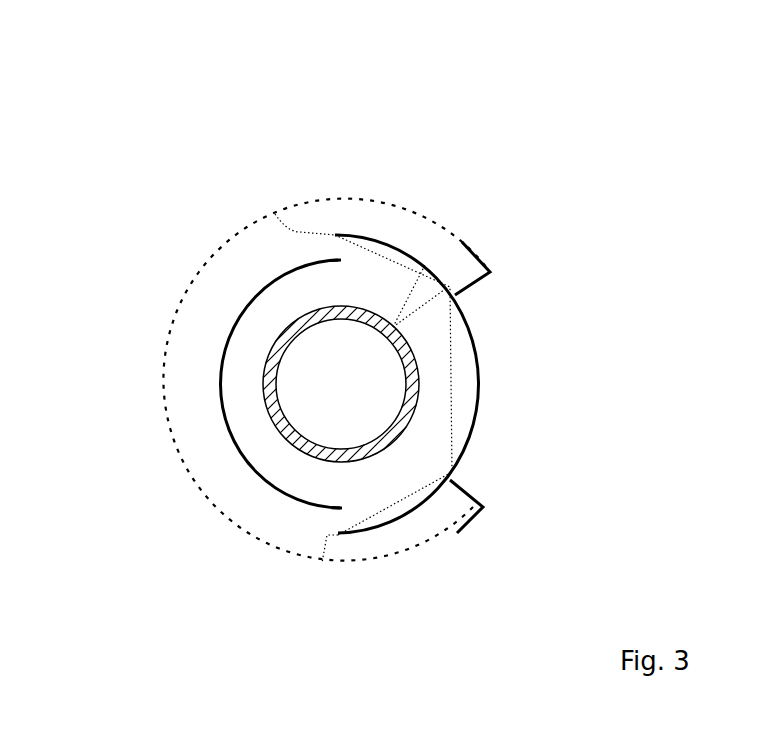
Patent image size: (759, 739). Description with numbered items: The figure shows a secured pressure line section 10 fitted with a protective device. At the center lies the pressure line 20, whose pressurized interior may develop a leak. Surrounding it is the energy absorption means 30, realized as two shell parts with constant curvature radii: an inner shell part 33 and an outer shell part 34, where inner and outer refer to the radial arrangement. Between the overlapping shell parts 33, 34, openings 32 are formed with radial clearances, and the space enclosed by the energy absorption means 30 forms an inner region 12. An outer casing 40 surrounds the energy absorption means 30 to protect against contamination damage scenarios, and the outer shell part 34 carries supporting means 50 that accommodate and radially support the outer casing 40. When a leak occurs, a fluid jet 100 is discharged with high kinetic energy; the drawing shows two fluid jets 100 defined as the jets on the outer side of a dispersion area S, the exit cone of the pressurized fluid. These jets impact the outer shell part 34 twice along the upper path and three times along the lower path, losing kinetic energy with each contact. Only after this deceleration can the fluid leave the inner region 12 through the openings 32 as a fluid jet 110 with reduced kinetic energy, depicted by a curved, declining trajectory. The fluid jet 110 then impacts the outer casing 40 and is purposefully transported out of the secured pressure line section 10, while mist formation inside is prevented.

The secured pressure line section 10 is at (371, 138).
The inner region 12 is at (232, 433).
The pressure line 20 is at (342, 463).
The energy absorption means 30 is at (208, 389).
The openings 32 is at (305, 248).
The inner shell part 33 is at (251, 306).
The outer shell part 34 is at (474, 315).
The outer casing 40 is at (186, 477).
The supporting means 50 is at (484, 262).
The fluid jet 100 is at (393, 252).
The fluid jet with reduced kinetic energy 110 is at (298, 229).
The dispersion area S is at (438, 289).